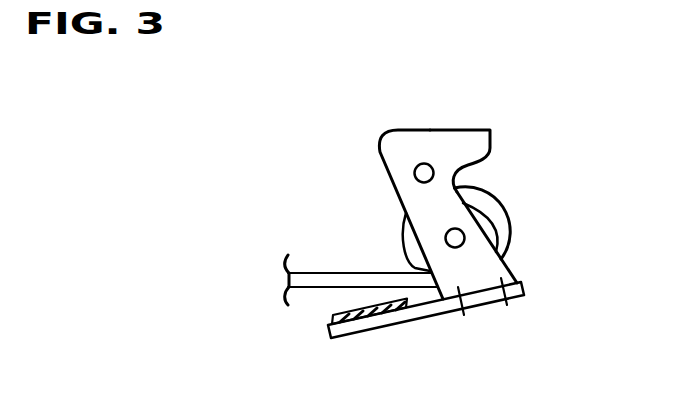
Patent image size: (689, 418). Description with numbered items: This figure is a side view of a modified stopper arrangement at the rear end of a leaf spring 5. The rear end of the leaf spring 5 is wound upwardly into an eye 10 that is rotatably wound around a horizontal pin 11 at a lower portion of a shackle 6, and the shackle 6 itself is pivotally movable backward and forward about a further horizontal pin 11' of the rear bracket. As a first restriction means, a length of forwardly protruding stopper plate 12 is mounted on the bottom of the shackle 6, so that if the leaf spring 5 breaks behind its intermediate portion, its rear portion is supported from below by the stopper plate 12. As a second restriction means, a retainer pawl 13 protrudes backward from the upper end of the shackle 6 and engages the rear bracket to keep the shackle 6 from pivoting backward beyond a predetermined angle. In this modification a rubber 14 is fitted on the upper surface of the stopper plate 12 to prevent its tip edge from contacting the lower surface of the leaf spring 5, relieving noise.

The leaf spring 5 is at (317, 273).
The shackle 6 is at (415, 191).
The eye 10 is at (484, 200).
The horizontal pin 11 is at (517, 233).
The horizontal pin 11' is at (379, 130).
The stopper plate 12 is at (438, 313).
The retainer pawl 13 is at (475, 142).
The rubber 14 is at (334, 321).